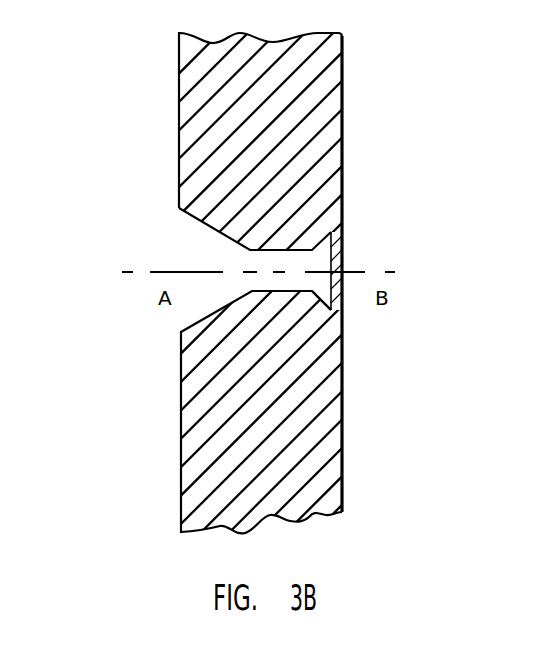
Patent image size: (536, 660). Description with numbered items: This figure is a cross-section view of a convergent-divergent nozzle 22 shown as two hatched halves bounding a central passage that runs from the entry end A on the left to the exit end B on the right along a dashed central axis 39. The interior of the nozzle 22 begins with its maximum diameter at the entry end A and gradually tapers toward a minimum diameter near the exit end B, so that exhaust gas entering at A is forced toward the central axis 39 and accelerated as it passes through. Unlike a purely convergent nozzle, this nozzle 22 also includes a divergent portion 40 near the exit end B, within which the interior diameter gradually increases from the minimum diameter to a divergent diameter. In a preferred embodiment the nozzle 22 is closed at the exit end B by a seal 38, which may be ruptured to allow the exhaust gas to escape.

The nozzle 22 is at (136, 225).
The seal 38 is at (342, 265).
The central axis 39 is at (355, 274).
The divergent portion 40 is at (343, 311).